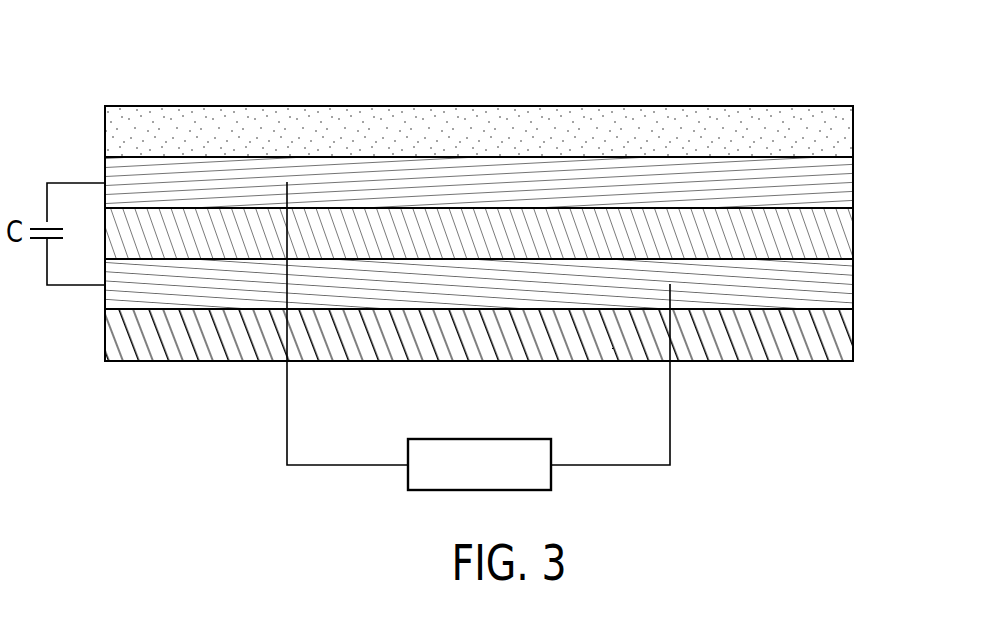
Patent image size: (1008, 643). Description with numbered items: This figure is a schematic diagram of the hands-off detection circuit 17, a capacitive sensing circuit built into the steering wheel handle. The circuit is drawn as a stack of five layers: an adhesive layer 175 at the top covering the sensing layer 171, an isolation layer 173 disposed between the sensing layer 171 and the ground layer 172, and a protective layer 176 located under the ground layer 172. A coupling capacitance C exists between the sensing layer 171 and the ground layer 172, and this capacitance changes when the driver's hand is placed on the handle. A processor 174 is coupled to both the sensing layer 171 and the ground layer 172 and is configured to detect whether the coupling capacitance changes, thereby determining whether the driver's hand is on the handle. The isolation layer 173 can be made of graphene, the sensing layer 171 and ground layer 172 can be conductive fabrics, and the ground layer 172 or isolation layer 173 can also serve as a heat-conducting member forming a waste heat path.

The hands-off detection circuit 17 is at (133, 72).
The adhesive layer 175 is at (828, 128).
The sensing layer 171 is at (838, 185).
The isolation layer 173 is at (827, 237).
The ground layer 172 is at (830, 292).
The protective layer 176 is at (830, 338).
The processor 174 is at (480, 439).